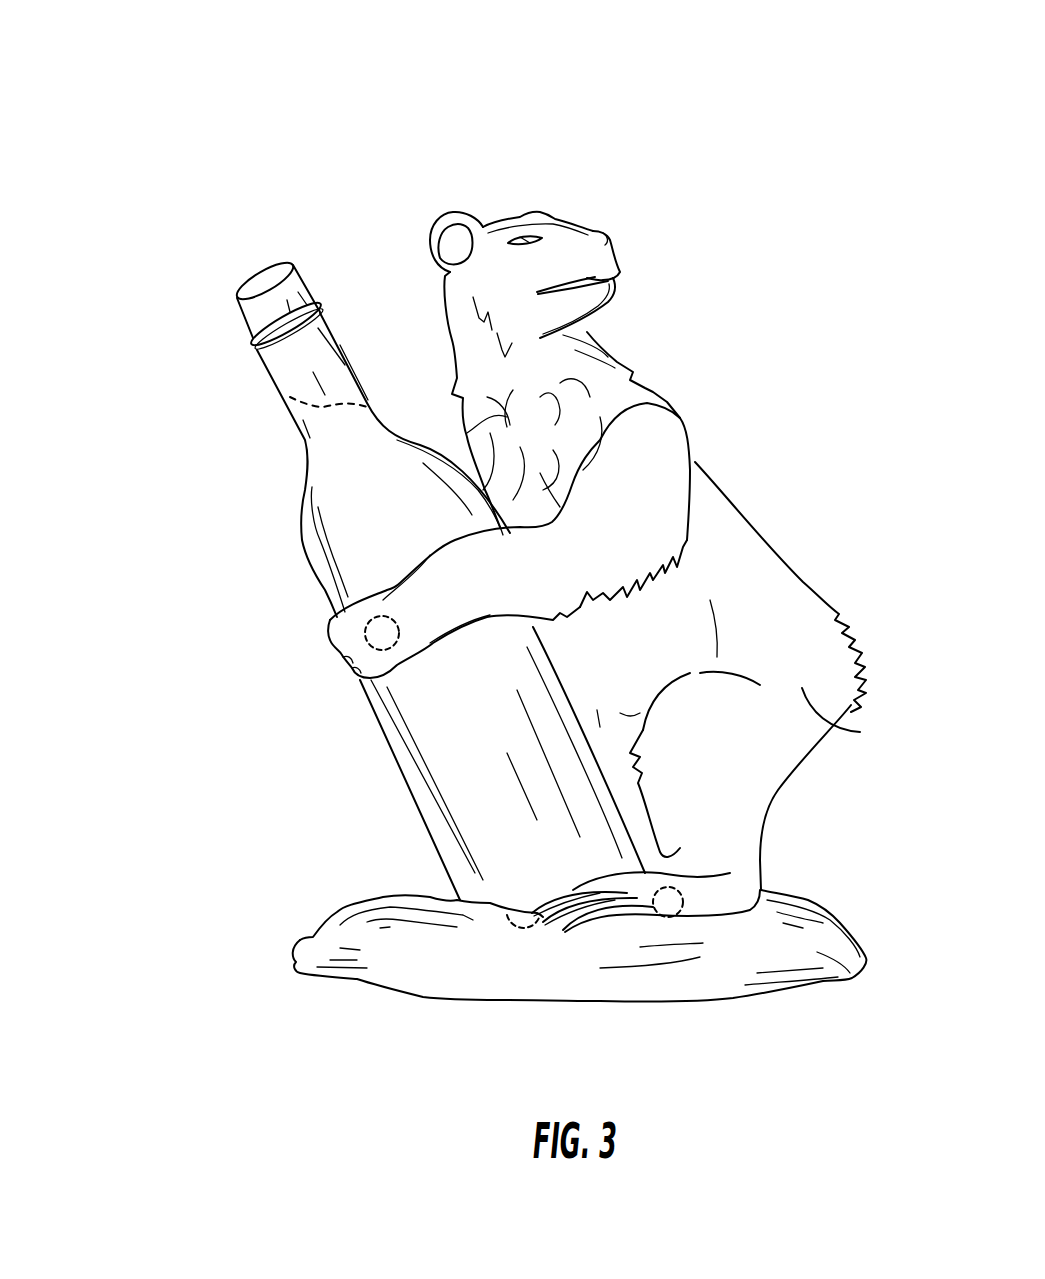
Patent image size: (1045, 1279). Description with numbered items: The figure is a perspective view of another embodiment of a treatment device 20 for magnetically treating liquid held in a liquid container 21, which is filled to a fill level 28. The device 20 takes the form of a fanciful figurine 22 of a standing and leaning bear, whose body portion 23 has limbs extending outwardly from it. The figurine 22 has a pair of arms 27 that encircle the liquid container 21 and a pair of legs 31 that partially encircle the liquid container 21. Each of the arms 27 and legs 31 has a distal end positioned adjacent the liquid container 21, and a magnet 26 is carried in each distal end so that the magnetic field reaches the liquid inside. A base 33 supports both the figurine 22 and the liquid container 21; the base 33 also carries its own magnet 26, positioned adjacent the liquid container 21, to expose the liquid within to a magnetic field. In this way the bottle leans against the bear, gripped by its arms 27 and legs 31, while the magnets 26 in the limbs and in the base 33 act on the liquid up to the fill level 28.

The treatment device 20 is at (300, 148).
The liquid container 21 is at (465, 794).
The figurine 22 is at (504, 210).
The body portion 23 is at (860, 732).
The magnet 26 is at (365, 633).
The arms 27 is at (440, 590).
The fill level 28 is at (290, 397).
The legs 31 is at (667, 777).
The base 33 is at (703, 940).